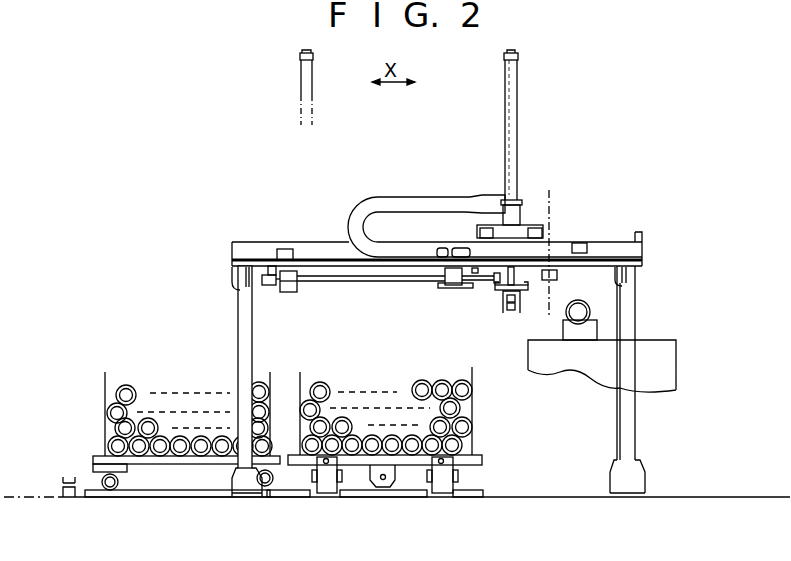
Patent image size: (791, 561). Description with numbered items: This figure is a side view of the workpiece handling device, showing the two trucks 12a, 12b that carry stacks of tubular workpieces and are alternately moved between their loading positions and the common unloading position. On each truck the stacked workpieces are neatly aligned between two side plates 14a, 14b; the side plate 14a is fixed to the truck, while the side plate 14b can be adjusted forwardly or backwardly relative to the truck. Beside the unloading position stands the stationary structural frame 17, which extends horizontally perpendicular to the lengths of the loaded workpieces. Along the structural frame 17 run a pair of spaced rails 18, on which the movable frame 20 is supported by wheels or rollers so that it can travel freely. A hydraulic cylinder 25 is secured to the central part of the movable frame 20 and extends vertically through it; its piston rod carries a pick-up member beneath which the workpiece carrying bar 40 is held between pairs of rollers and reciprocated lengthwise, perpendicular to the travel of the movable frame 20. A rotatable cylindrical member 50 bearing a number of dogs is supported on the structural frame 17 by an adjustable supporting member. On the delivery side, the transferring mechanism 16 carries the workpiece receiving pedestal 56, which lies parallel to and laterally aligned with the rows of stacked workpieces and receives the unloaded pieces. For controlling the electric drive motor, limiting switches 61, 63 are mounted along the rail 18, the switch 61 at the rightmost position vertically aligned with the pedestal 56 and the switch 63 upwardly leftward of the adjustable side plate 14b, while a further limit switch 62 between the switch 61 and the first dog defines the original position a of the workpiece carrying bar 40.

The truck 12a is at (410, 465).
The truck 12b is at (168, 465).
The side plate 14a is at (270, 372).
The side plate 14b is at (105, 372).
The transferring mechanism 16 is at (673, 362).
The structural frame 17 is at (238, 308).
The rails 18 is at (232, 250).
The movable frame 20 is at (523, 226).
The hydraulic cylinder 25 is at (517, 96).
The workpiece carrying bar 40 is at (507, 303).
The cylindrical member 50 is at (357, 281).
The workpiece receiving pedestal 56 is at (563, 330).
The limiting switch 61 is at (582, 243).
The limit switch 62 is at (557, 275).
The limiting switch 63 is at (286, 249).
The original position a is at (551, 196).